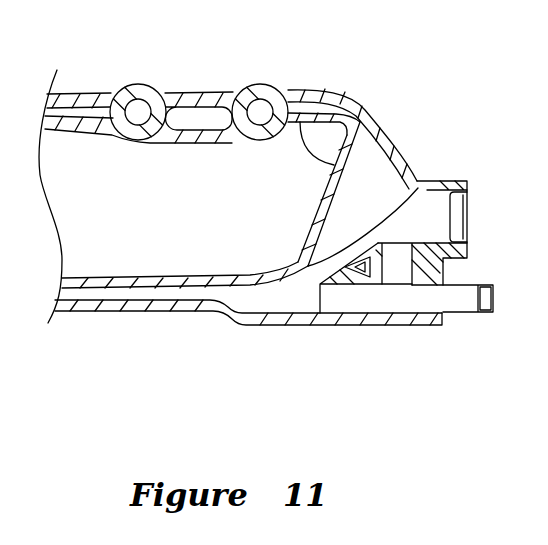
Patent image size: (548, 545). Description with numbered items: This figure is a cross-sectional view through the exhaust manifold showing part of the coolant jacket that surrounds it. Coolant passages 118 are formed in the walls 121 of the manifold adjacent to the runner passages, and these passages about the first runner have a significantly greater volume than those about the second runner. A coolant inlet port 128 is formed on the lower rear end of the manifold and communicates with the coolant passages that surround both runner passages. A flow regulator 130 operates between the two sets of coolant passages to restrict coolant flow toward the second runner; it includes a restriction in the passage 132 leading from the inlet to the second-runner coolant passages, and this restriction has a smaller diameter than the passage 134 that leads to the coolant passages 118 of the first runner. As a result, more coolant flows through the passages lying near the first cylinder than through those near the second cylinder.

The coolant passages 118 is at (213, 118).
The walls 121 is at (84, 312).
The coolant inlet port 128 is at (465, 316).
The flow regulator 130 is at (400, 334).
The passage 132 is at (334, 288).
The passage 134 is at (400, 263).